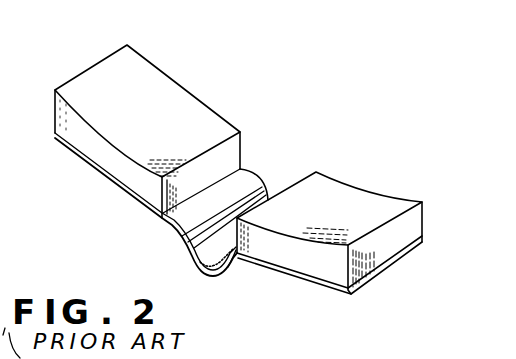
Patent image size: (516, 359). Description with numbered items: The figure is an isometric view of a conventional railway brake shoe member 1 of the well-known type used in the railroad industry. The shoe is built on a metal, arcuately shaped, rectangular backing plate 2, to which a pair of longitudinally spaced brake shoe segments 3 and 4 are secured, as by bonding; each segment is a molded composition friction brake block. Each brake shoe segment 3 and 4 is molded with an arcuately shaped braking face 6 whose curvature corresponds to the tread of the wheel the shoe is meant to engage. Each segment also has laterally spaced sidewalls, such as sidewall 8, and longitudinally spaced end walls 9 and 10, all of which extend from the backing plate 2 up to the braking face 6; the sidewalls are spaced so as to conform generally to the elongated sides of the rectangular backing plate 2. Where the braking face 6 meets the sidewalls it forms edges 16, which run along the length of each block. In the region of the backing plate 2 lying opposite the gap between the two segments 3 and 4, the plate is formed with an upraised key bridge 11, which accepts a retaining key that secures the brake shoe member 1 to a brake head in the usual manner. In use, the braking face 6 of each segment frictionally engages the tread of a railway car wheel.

The brake shoe member 1 is at (266, 147).
The backing plate 2 is at (302, 278).
The brake shoe segment 3 is at (145, 72).
The brake shoe segment 4 is at (365, 180).
The braking face 6 is at (205, 123).
The sidewall 8 is at (107, 163).
The end wall 9 is at (373, 265).
The end wall 10 is at (160, 211).
The key bridge 11 is at (187, 248).
The edges 16 is at (180, 84).